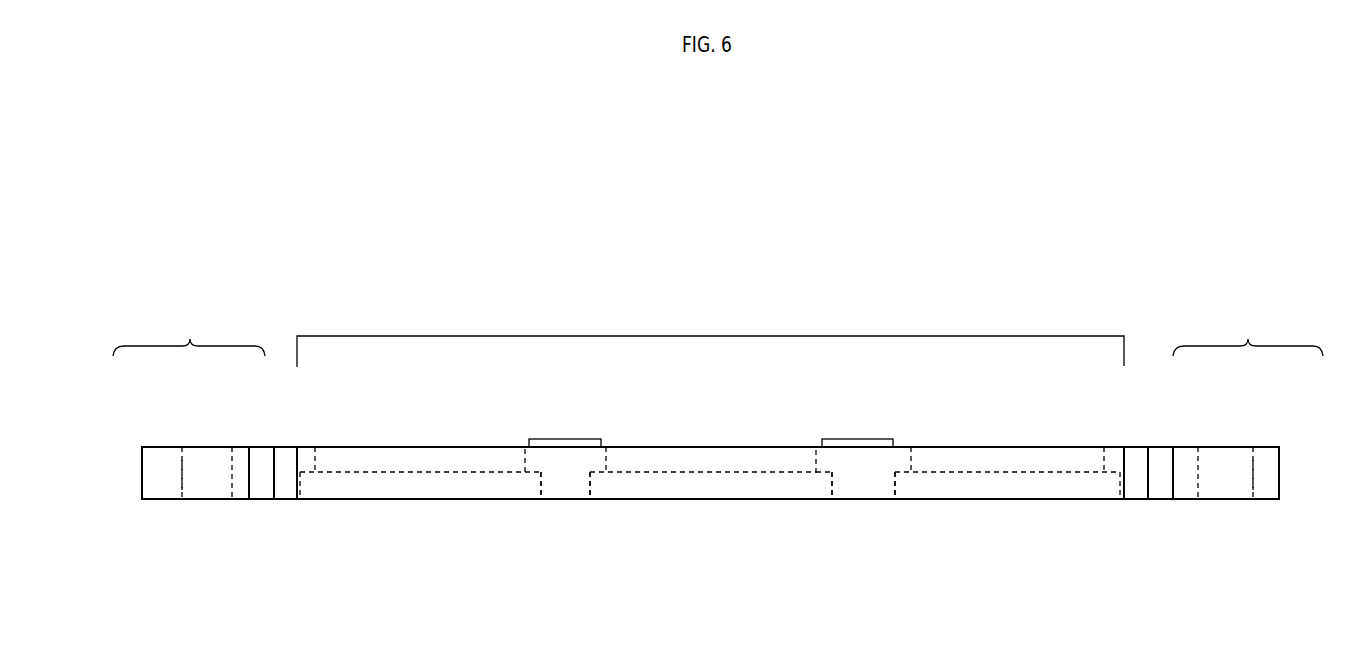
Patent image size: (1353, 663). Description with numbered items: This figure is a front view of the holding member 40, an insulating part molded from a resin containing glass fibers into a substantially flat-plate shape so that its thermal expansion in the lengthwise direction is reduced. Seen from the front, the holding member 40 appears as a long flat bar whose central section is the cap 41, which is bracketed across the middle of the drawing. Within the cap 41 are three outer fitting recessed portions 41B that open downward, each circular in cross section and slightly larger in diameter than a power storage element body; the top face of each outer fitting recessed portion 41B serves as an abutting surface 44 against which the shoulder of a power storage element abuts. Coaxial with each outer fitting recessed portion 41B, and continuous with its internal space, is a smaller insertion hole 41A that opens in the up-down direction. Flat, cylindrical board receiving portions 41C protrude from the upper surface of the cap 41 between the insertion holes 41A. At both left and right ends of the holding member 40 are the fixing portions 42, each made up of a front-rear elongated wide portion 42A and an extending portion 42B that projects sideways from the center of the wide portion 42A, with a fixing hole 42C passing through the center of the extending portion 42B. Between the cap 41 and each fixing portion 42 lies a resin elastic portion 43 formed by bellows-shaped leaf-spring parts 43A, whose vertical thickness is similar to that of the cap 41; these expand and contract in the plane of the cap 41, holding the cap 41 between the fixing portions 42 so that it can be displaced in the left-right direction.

The holding member 40 is at (723, 172).
The cap 41 is at (728, 335).
The insertion hole 41A is at (318, 462).
The outer fitting recessed portion 41B is at (537, 485).
The board receiving portion 41C is at (566, 438).
The fixing portion 42 is at (718, 404).
The wide portion 42A is at (242, 447).
The extending portion 42B is at (156, 447).
The fixing hole 42C is at (185, 473).
The resin elastic portion 43 is at (277, 515).
The leaf-spring part 43A is at (265, 499).
The abutting surface 44 is at (592, 477).